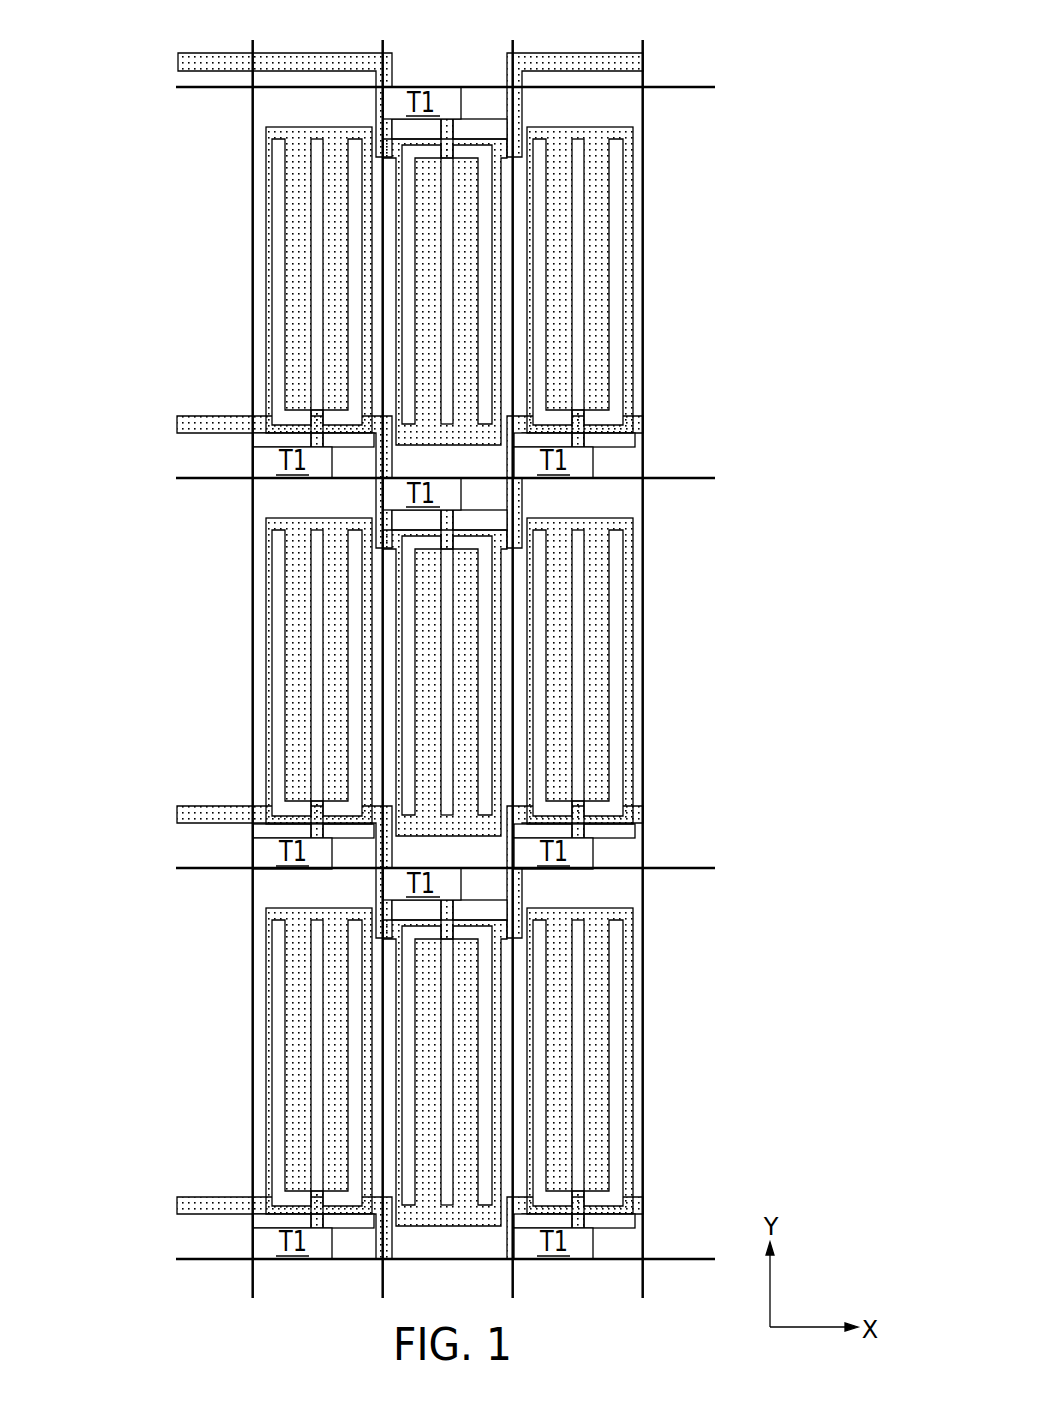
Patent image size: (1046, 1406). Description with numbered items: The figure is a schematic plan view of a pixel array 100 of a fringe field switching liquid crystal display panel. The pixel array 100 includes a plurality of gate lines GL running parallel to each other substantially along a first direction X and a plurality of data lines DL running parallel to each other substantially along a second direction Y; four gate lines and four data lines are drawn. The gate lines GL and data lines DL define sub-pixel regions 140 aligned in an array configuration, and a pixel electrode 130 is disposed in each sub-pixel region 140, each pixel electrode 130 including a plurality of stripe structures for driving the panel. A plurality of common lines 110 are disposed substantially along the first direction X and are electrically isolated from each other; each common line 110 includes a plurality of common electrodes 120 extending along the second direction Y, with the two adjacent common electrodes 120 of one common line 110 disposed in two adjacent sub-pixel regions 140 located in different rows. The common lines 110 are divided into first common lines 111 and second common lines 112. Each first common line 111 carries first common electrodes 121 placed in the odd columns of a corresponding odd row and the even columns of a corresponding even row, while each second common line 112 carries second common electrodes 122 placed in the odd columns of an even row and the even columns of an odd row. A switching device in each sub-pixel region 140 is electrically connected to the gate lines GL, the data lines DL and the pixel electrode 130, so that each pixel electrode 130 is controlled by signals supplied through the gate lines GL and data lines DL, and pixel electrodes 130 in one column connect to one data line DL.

The pixel array 100 is at (750, 41).
The common line 110 is at (350, 638).
The first common line 111 is at (186, 425).
The second common line 112 is at (190, 61).
The common electrode 120 is at (459, 672).
The first common electrode 121 is at (270, 129).
The second common electrode 122 is at (465, 437).
The pixel electrode 130 is at (613, 252).
The sub-pixel region 140 is at (633, 456).
The data line DL is at (448, 657).
The gate line GL is at (400, 676).